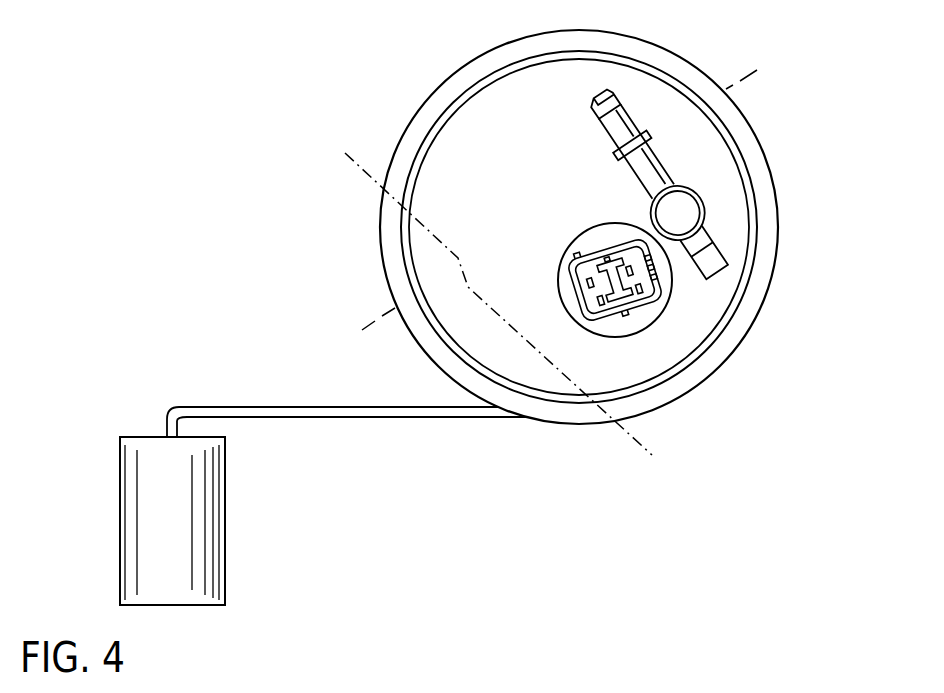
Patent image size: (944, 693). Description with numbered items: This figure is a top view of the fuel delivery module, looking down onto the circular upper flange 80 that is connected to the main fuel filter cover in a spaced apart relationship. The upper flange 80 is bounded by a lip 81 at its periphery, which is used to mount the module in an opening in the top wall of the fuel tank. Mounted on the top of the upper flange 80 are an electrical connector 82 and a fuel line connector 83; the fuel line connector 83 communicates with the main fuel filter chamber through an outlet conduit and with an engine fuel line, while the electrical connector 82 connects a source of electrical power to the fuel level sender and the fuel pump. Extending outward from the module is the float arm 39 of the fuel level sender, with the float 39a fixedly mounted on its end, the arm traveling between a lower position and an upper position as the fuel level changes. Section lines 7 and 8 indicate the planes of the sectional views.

The upper flange 80 is at (688, 318).
The lip 81 is at (778, 232).
The electrical connector 82 is at (603, 325).
The fuel line connector 83 is at (694, 204).
The float arm 39 is at (428, 412).
The float 39a is at (178, 590).
The section line 7- 7 is at (345, 153).
The section line 8- 8 is at (757, 70).